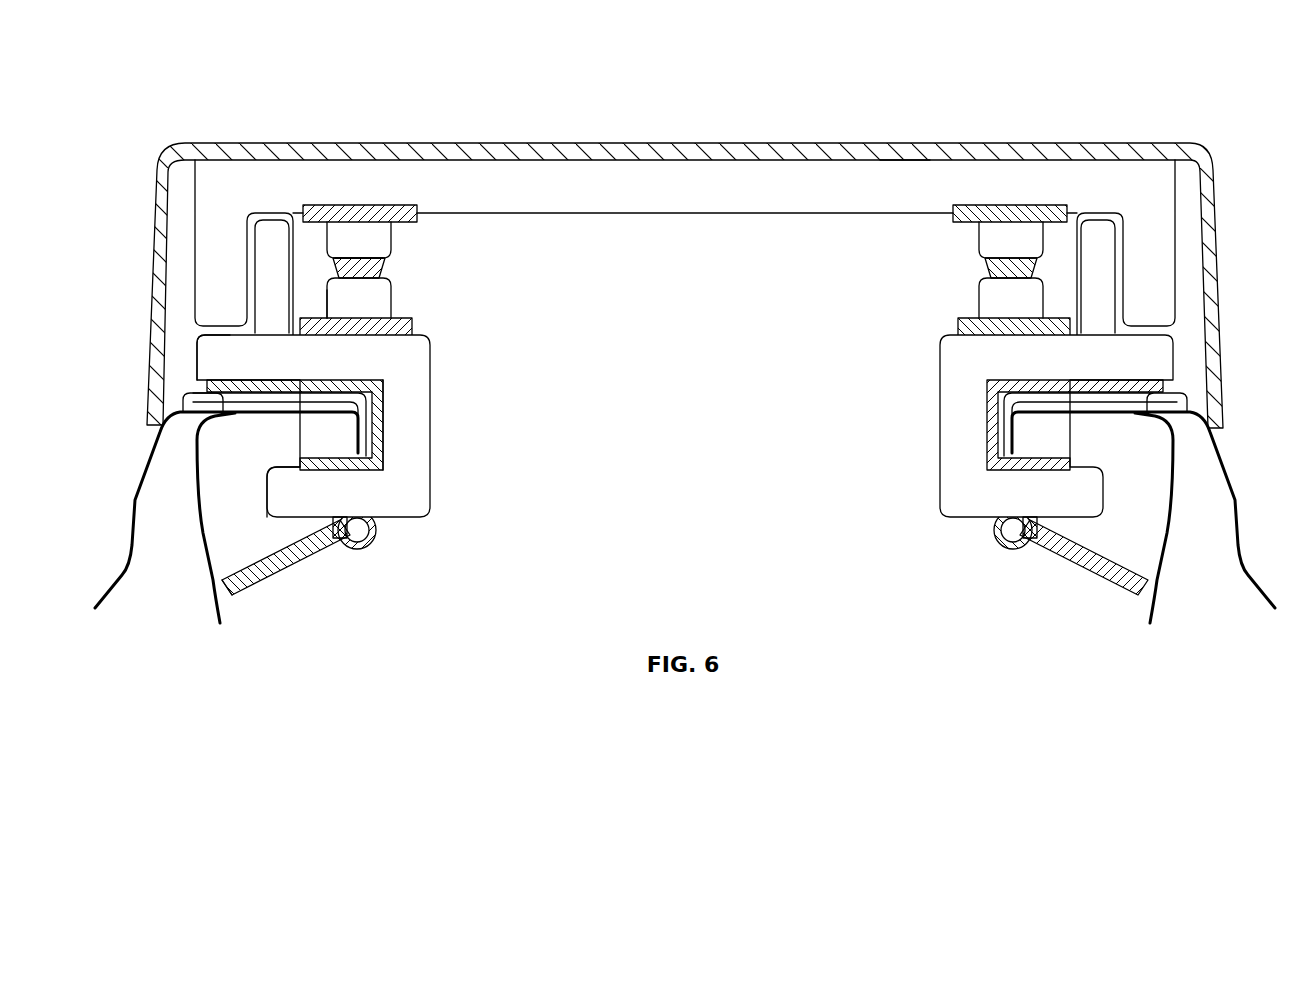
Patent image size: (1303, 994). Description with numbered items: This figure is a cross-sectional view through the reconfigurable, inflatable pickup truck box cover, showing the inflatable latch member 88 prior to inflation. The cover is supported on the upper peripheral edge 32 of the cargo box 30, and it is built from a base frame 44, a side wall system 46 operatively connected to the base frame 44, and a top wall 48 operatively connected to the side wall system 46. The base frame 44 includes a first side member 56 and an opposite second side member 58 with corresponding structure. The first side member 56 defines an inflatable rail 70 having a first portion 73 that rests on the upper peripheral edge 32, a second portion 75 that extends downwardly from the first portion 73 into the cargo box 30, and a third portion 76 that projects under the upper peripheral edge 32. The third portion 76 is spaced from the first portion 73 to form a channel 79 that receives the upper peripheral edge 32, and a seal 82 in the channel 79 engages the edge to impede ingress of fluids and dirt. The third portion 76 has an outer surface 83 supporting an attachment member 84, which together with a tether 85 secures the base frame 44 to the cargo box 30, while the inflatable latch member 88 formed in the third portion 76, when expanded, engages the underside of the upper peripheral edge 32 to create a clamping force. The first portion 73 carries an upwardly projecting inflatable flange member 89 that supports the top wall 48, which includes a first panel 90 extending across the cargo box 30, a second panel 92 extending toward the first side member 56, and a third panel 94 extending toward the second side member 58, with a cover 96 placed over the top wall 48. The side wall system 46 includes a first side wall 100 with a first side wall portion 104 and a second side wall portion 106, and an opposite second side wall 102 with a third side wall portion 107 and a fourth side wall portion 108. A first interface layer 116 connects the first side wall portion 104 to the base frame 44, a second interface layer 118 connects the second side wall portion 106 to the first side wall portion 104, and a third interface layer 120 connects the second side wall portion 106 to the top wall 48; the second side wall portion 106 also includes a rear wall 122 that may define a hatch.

The cargo box 30 is at (208, 517).
The upper peripheral edge 32 is at (180, 417).
The base frame 44 is at (304, 569).
The side wall system 46 is at (200, 219).
The top wall 48 is at (612, 125).
The first side member 56 is at (305, 468).
The second side member 58 is at (936, 385).
The inflatable rail 70 is at (408, 443).
The first portion 73 is at (207, 342).
The second portion 75 is at (417, 370).
The third portion 76 is at (360, 510).
The channel 79 is at (306, 443).
The seal 82 is at (413, 463).
The outer surface 83 is at (268, 580).
The attachment member 84 is at (343, 543).
The tether 85 is at (225, 577).
The inflatable latch member 88 is at (267, 470).
The inflatable flange member 89 is at (270, 248).
The first panel 90 is at (648, 180).
The second panel 92 is at (207, 248).
The third panel 94 is at (1150, 227).
The cover 96 is at (903, 160).
The first side wall 100 is at (318, 298).
The second side wall 102 is at (1050, 272).
The first side wall portion 104 is at (395, 298).
The second side wall portion 106 is at (368, 237).
The third side wall portion 107 is at (985, 305).
The fourth side wall portion 108 is at (985, 252).
The first interface layer 116 is at (405, 333).
The second interface layer 118 is at (383, 270).
The third interface layer 120 is at (352, 207).
The rear wall 122 is at (392, 245).